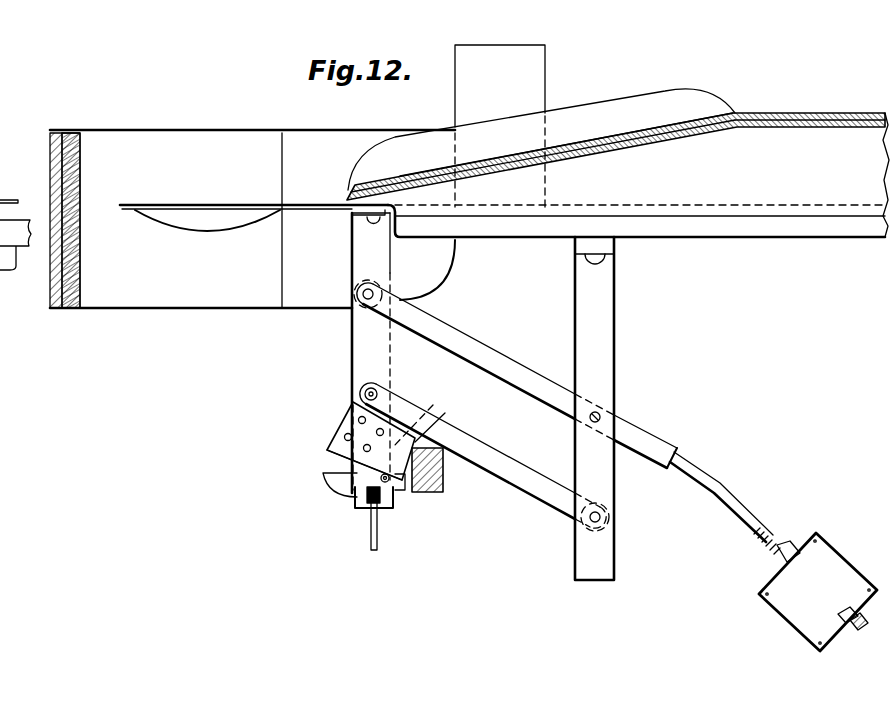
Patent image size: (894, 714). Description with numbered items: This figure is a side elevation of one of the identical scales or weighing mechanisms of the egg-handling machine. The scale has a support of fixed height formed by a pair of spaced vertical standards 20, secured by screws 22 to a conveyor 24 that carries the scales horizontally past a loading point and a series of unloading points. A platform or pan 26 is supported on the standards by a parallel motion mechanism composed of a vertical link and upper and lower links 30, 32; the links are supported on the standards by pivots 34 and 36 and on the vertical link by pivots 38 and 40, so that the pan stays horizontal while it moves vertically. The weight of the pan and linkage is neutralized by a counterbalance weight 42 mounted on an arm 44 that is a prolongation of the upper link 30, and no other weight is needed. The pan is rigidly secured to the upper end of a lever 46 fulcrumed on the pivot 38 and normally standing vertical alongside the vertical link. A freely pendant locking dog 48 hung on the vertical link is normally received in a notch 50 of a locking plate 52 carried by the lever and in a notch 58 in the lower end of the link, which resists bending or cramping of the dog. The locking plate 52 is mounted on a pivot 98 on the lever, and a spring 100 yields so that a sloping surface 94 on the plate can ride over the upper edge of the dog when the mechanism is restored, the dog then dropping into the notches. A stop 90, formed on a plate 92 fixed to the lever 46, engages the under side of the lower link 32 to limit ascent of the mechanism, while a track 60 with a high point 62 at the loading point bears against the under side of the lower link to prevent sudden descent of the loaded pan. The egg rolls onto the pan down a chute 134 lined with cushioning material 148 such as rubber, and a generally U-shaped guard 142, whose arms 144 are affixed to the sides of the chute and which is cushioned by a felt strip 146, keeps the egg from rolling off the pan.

The guard 142 is at (52, 158).
The strip of cushioning material 146 is at (72, 308).
The platform or pan 26 is at (208, 205).
The arms of the guard 144 is at (342, 137).
The cushioning material 148 is at (612, 132).
The chute 134 is at (648, 140).
The conveyor 24 is at (760, 237).
The screws 22 is at (583, 262).
The vertical standards 20 is at (617, 343).
The lever 46 is at (352, 346).
The pivot 38 is at (362, 299).
The upper link 30 is at (515, 371).
The pivot 34 is at (600, 416).
The pivot 36 is at (603, 515).
The lower link 32 is at (462, 440).
The pivot 40 is at (380, 393).
The high point of the track 62 is at (446, 415).
The stop 90 is at (428, 425).
The plate 92 is at (346, 420).
The spring 100 is at (340, 463).
The sloping surface 94 is at (330, 488).
The notch 50 is at (358, 493).
The notch 58 is at (372, 504).
The locking dog 48 is at (380, 532).
The locking plate 52 is at (400, 483).
The pivot 98 is at (404, 491).
The track 60 is at (447, 481).
The arm 44 is at (735, 500).
The weight 42 is at (840, 557).